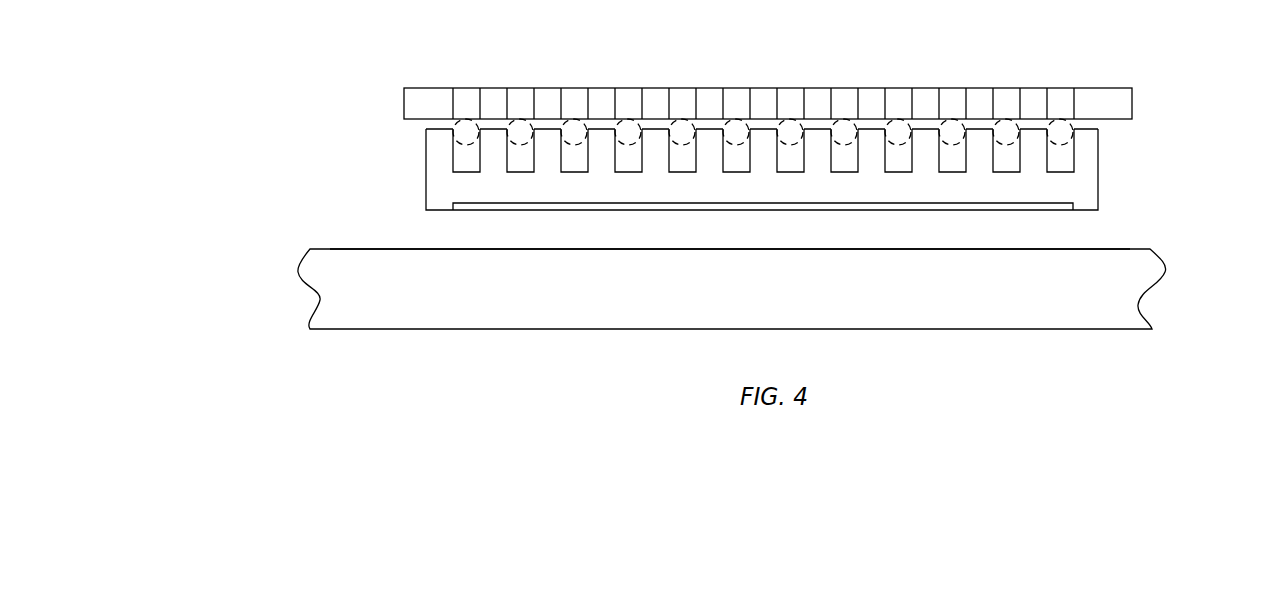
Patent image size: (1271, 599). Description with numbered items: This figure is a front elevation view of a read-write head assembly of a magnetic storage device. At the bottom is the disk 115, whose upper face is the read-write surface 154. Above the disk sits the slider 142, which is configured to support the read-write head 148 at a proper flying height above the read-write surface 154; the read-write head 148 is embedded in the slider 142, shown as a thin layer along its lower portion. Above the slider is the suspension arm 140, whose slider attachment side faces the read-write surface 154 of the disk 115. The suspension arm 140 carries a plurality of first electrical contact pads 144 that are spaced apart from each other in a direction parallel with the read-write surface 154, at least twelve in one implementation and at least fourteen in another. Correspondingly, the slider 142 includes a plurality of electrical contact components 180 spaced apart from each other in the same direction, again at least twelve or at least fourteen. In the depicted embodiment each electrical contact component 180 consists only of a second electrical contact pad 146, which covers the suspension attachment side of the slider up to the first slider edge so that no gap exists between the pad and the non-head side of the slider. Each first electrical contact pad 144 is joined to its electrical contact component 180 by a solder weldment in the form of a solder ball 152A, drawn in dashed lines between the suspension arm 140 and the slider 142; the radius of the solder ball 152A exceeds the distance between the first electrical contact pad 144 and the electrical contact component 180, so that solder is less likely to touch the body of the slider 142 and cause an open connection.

The suspension arm 140 is at (1103, 100).
The slider 142 is at (1082, 157).
The first electrical contact pad 144 is at (467, 100).
The second electrical contact pad 146 is at (462, 168).
The read-write head 148 is at (1045, 207).
The solder ball 152A is at (598, 118).
The electrical contact component 180 is at (485, 177).
The disk 115 is at (1137, 277).
The read-write surface 154 is at (347, 249).